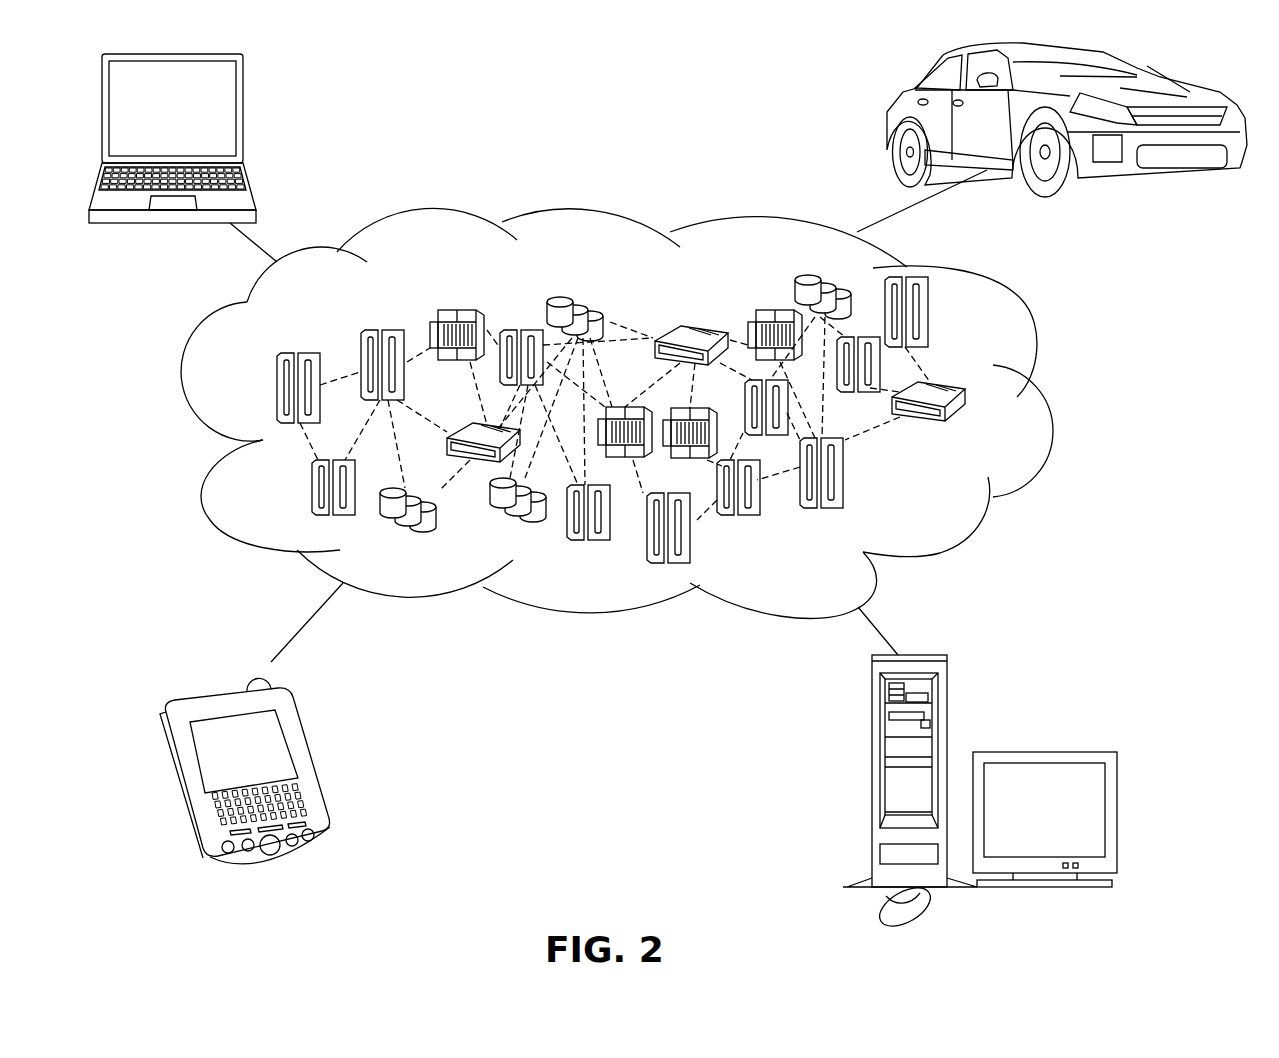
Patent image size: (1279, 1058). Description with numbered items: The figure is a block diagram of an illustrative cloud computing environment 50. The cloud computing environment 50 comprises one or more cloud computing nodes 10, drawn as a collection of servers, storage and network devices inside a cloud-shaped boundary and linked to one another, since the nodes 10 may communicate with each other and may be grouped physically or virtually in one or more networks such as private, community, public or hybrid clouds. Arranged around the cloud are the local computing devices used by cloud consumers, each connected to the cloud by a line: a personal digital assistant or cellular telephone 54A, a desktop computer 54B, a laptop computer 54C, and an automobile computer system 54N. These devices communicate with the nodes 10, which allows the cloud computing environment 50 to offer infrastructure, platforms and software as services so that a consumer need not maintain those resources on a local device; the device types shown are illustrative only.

The cloud computing node 10 is at (948, 503).
The cloud computing environment 50 is at (1040, 400).
The personal digital assistant or cellular telephone 54A is at (303, 730).
The desktop computer 54B is at (870, 718).
The laptop computer 54C is at (245, 93).
The automobile computer system 54N is at (887, 110).